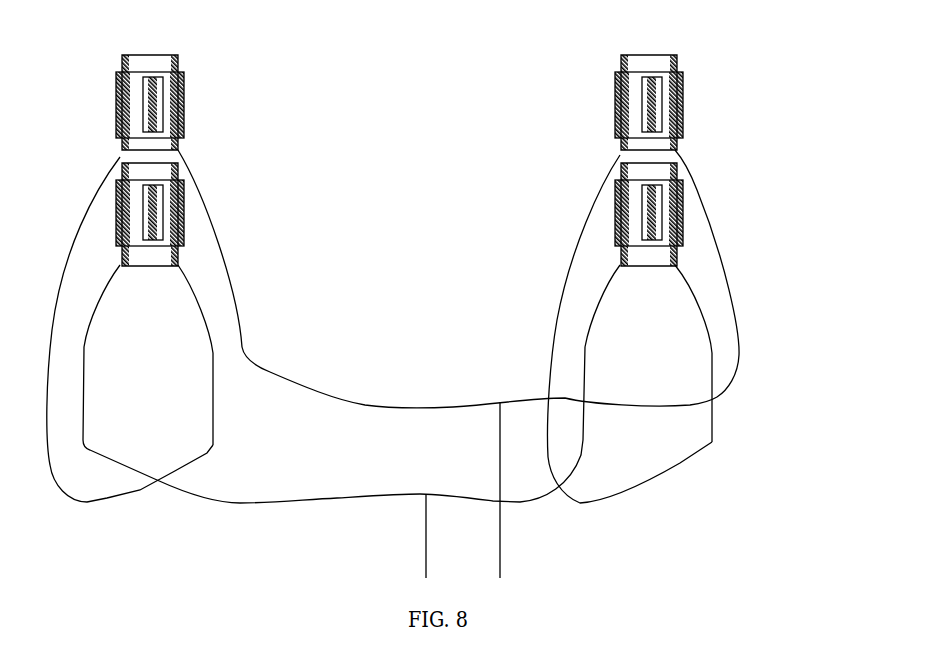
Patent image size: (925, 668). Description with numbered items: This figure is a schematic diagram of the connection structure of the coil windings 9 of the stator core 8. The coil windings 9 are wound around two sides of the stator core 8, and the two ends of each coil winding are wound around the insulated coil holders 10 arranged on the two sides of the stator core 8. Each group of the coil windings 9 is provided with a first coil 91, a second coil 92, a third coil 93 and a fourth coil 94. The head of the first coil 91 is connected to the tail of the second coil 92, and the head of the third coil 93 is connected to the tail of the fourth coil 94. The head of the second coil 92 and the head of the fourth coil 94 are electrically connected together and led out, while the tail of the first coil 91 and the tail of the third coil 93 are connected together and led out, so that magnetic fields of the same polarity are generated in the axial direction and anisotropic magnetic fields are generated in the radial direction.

The stator core 8 is at (683, 98).
The coil windings 9 is at (678, 145).
The insulated coil holders 10 is at (661, 69).
The first coil 91 is at (114, 173).
The second coil 92 is at (231, 507).
The third coil 93 is at (712, 445).
The fourth coil 94 is at (730, 278).